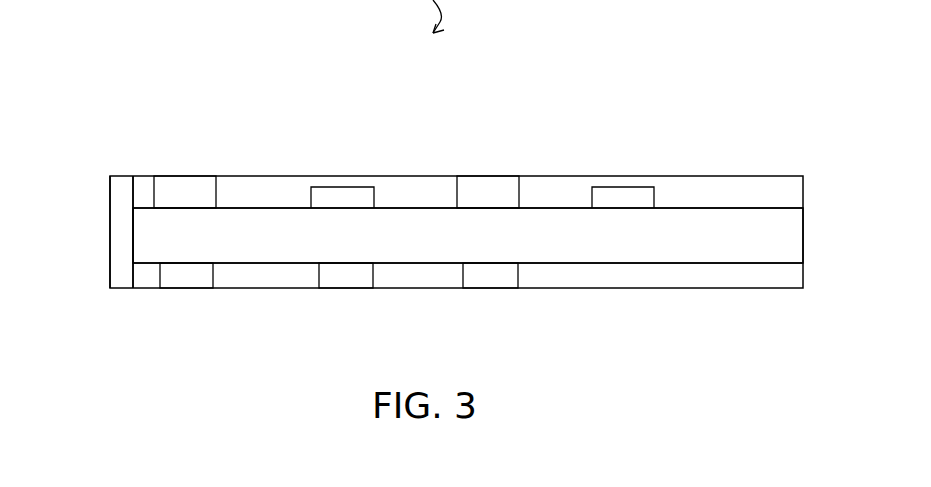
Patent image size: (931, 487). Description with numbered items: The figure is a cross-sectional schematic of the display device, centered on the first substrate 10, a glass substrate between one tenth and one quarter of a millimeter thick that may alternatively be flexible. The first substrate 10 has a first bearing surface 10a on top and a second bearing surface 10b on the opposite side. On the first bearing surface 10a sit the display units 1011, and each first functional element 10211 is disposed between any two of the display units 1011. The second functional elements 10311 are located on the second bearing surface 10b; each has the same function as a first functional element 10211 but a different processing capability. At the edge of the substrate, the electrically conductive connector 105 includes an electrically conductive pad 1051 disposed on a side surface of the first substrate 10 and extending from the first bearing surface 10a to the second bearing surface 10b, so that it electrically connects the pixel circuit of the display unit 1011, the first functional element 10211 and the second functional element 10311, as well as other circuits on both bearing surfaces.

The first substrate 10 is at (775, 235).
The first bearing surface 10a is at (777, 207).
The second bearing surface 10b is at (722, 263).
The display unit 1011 is at (183, 185).
The first functional element 10211 is at (337, 188).
The second functional element 10311 is at (183, 282).
The electrically conductive connector 105 is at (122, 270).
The electrically conductive pad 1051 is at (122, 237).